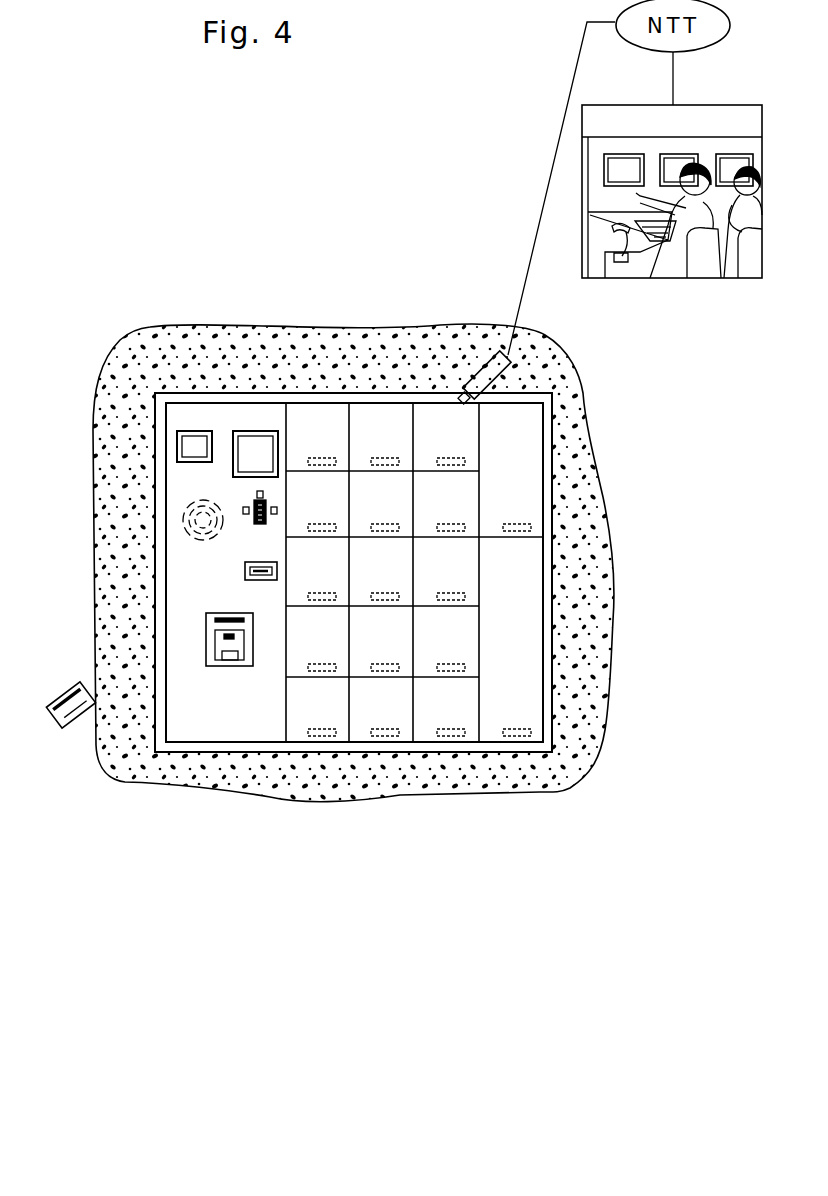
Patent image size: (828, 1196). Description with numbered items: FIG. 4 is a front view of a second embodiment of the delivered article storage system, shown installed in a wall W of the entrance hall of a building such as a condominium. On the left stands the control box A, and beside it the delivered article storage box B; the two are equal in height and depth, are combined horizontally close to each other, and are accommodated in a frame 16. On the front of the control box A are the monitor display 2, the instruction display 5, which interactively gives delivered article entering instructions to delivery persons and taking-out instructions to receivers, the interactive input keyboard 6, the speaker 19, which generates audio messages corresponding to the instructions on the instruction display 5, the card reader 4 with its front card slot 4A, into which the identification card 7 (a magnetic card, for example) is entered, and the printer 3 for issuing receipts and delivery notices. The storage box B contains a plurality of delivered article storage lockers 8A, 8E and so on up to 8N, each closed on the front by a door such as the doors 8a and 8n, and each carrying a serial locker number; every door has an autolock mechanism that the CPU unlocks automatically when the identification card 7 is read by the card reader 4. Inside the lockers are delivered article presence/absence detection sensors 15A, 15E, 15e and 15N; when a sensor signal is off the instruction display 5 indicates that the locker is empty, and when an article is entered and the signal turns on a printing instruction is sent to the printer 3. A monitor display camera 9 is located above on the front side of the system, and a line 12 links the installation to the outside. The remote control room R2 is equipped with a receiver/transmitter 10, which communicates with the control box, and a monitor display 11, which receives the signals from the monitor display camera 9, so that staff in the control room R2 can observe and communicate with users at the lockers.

The monitor display 2 is at (201, 436).
The control box A is at (235, 388).
The instruction display 5 is at (258, 440).
The delivered article storage locker 8A is at (298, 425).
The door 8a is at (318, 418).
The delivered article presence/absence detection sensor 15A is at (328, 452).
The monitor display camera 9 is at (482, 368).
The communication line 12 is at (601, 24).
The control room R2 is at (712, 105).
The monitor display 11 is at (608, 170).
The receiver/transmitter 10 is at (612, 229).
The interactive input keyboard 6 is at (255, 503).
The speaker 19 is at (183, 515).
The card reader 4 is at (240, 571).
The card slot 4A is at (250, 578).
The identification card 7 is at (81, 715).
The printer 3 is at (206, 650).
The delivered article storage box B is at (556, 466).
The wall W is at (160, 773).
The delivered article storage locker 8E is at (288, 702).
The delivered article presence/absence detection sensor 15E is at (318, 738).
The lock 15e is at (340, 718).
The frame 16 is at (442, 745).
The door 8n is at (504, 723).
The delivered article presence/absence detection sensor 15N is at (528, 737).
The delivered article storage locker 8N is at (530, 712).